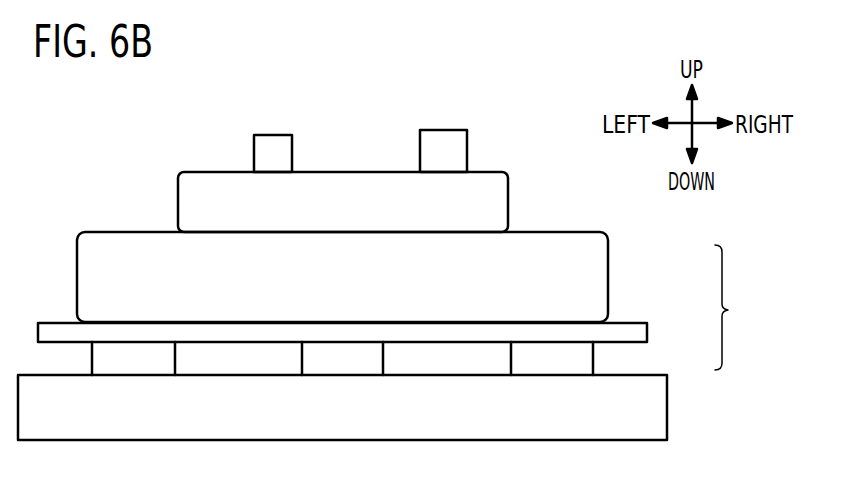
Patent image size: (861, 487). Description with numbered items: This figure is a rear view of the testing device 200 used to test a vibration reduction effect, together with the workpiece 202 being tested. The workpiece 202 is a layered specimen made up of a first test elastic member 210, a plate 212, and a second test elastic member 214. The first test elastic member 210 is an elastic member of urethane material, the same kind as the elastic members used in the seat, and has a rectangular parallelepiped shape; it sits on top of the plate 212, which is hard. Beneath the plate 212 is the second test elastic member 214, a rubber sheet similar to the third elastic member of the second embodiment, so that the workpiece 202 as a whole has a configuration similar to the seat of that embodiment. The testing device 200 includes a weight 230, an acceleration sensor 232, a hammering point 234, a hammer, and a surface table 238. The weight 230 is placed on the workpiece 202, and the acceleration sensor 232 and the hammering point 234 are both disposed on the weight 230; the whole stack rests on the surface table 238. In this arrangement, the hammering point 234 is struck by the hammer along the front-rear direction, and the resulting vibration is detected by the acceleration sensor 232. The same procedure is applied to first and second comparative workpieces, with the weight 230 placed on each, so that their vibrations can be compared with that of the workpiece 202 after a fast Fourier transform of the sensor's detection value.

The testing device 200 is at (150, 151).
The workpiece 202 is at (740, 307).
The first test elastic member 210 is at (592, 252).
The plate 212 is at (630, 330).
The second test elastic member 214 is at (578, 365).
The weight 230 is at (193, 198).
The acceleration sensor 232 is at (271, 142).
The hammering point 234 is at (438, 140).
The surface table 238 is at (660, 405).